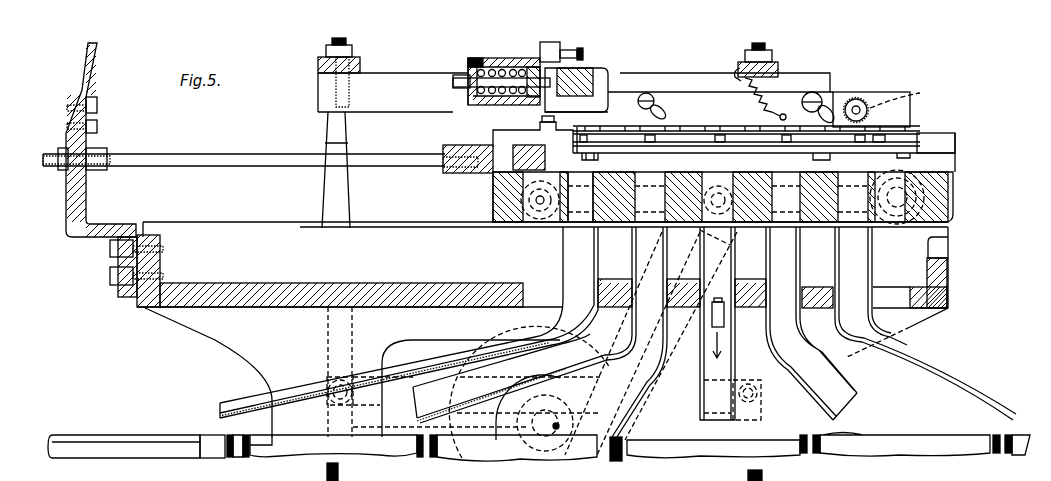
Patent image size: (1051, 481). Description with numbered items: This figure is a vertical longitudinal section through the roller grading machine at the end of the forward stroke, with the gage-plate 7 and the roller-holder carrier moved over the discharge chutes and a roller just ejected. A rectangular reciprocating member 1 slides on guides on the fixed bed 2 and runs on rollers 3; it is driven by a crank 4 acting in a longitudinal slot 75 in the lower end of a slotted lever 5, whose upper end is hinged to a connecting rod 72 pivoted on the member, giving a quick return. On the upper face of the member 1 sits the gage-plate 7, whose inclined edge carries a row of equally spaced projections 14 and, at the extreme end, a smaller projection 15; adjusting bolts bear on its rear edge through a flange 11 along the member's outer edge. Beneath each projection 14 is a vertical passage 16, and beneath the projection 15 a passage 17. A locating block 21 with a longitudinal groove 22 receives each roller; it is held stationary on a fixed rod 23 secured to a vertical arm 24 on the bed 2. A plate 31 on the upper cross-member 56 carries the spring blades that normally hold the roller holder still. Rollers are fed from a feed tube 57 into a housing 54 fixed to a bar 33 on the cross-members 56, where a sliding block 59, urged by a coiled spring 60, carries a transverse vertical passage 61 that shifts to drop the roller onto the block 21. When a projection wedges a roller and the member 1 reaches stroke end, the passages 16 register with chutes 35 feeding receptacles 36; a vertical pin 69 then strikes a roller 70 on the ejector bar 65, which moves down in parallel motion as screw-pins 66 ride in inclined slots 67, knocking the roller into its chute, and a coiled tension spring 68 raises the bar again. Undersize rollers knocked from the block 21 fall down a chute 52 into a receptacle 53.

The reciprocating member 1 is at (953, 198).
The fixed bed 2 is at (264, 298).
The rollers 3 is at (527, 225).
The crank 4 is at (549, 438).
The slotted lever 5 is at (694, 258).
The gage-plate 7 is at (757, 146).
The flange 11 is at (947, 144).
The projections 14 is at (617, 148).
The smaller projection 15 is at (893, 140).
The vertical passage 16 is at (650, 194).
The vertical passage 17 is at (890, 177).
The locating block 21 is at (468, 173).
The longitudinal groove 22 is at (540, 133).
The fixed rod 23 is at (206, 158).
The vertical arm 24 is at (90, 151).
The plate 31 is at (560, 228).
The bar 33 is at (372, 112).
The chutes 35 is at (935, 385).
The receptacle 36 is at (314, 435).
The chute 52 is at (512, 338).
The receptacle 53 is at (162, 435).
The housing 54 is at (501, 73).
The cross-member 56 is at (360, 66).
The feed tube 57 is at (583, 52).
The sliding block 59 is at (620, 74).
The coiled spring 60 is at (470, 72).
The transverse vertical passage 61 is at (588, 73).
The ejector bar 65 is at (738, 73).
The screw-pins 66 is at (834, 108).
The inclined slot 67 is at (666, 112).
The coiled tension spring 68 is at (816, 96).
The vertical pin 69 is at (867, 105).
The roller 70 is at (905, 94).
The connecting rod 72 is at (581, 228).
The longitudinal slot 75 is at (640, 397).